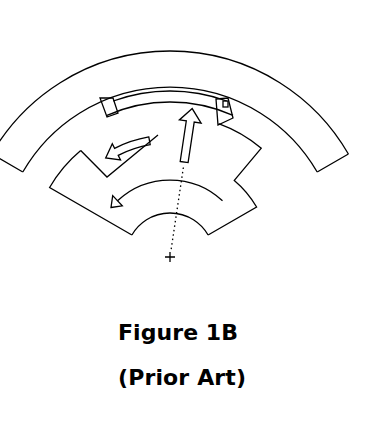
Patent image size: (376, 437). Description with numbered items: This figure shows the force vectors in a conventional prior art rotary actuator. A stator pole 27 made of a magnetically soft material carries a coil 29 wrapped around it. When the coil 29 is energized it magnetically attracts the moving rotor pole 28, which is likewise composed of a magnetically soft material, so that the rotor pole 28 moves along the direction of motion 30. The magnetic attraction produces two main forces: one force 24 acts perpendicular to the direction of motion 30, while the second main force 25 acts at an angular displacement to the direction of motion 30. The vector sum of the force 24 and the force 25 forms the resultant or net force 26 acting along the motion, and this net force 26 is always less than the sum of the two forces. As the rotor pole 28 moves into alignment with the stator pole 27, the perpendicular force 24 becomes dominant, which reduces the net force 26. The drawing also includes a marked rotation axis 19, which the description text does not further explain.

The rotation axis 19 is at (177, 262).
The force 24 is at (210, 142).
The second main force 25 is at (139, 89).
The net force 26 is at (102, 128).
The stator pole 27 is at (256, 78).
The moving rotor pole 28 is at (87, 192).
The coil 29 is at (182, 79).
The direction of motion 30 is at (231, 202).